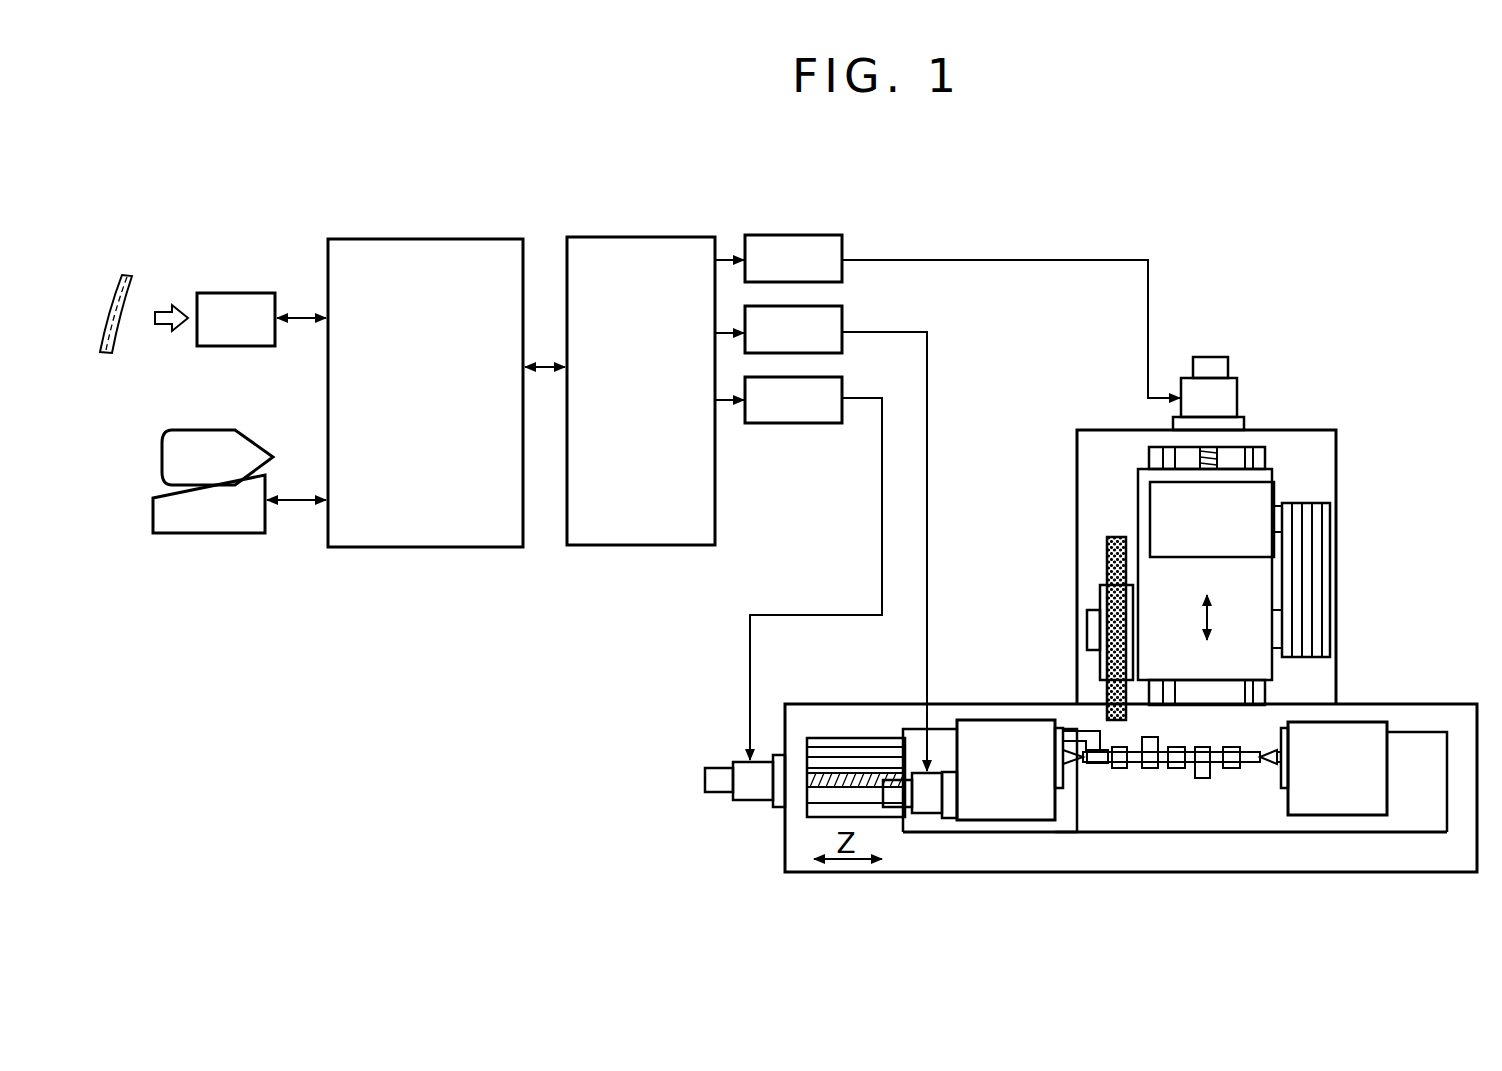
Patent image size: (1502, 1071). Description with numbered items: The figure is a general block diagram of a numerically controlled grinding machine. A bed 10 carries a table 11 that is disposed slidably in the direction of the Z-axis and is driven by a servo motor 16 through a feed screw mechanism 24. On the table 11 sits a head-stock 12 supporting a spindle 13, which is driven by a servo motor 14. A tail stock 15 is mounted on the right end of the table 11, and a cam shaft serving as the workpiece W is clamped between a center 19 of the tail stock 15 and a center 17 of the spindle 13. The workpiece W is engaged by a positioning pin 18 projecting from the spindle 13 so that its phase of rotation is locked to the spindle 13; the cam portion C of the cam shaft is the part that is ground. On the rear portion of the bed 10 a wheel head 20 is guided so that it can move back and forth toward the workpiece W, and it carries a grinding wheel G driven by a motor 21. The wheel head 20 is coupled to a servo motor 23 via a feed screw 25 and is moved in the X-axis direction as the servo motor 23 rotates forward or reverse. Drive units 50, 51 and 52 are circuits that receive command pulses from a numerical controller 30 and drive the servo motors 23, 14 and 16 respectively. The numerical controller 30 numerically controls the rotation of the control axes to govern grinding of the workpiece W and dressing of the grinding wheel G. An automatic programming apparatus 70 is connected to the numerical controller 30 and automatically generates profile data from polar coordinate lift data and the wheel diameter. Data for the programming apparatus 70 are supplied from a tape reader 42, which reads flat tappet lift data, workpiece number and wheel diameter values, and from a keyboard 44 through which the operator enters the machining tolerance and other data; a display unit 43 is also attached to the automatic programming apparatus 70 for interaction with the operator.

The bed 10 is at (1433, 703).
The table 11 is at (1422, 833).
The head-stock 12 is at (1000, 817).
The spindle 13 is at (1057, 790).
The servo motor 14 is at (927, 810).
The tail stock 15 is at (1342, 816).
The servo motor 16 is at (745, 806).
The center 17 is at (1078, 763).
The positioning pin 18 is at (1080, 737).
The center 19 is at (1270, 768).
The wheel head 20 is at (1272, 668).
The motor 21 is at (1274, 494).
The servo motor 23 is at (1237, 394).
The feed screw mechanism 24 is at (828, 778).
The feed screw 25 is at (1210, 448).
The numerical controller 30 is at (572, 237).
The tape reader 42 is at (205, 293).
The CRT display 43 is at (165, 440).
The keyboard 44 is at (158, 535).
The drive unit 50 is at (842, 236).
The drive unit 51 is at (842, 316).
The drive unit 52 is at (842, 387).
The automatic programming apparatus 70 is at (333, 237).
The grinding wheel G is at (1107, 560).
The workpiece W is at (1205, 783).
The cam portion C is at (1118, 768).